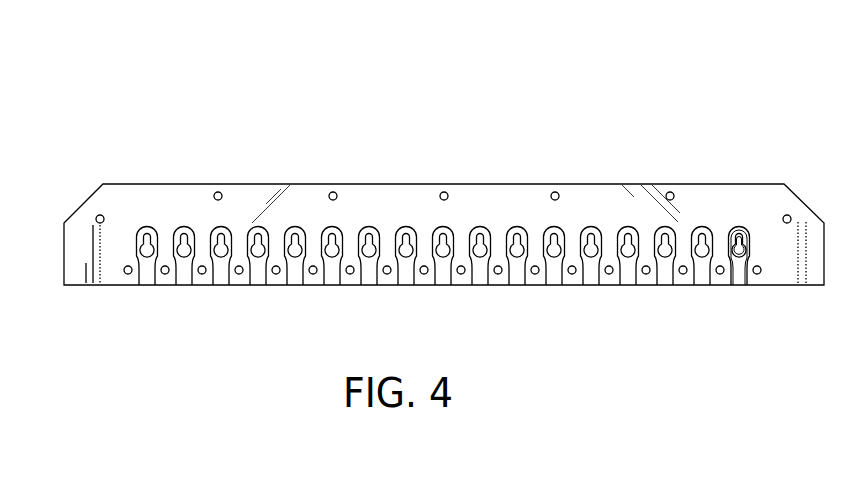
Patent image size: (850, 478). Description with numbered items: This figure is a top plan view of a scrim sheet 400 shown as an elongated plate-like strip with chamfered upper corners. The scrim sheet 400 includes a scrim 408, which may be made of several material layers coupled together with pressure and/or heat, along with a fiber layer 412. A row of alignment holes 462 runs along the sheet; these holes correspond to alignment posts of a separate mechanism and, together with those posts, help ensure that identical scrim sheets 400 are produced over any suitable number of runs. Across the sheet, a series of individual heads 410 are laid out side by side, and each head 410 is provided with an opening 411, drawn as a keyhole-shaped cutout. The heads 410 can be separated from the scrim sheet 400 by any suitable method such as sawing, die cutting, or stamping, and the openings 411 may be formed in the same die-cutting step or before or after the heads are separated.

The scrim sheet 400 is at (227, 96).
The scrim 408 is at (666, 184).
The head 410 is at (450, 225).
The opening 411 is at (147, 226).
The fiber layer 412 is at (185, 225).
The alignment hole 462 is at (334, 196).